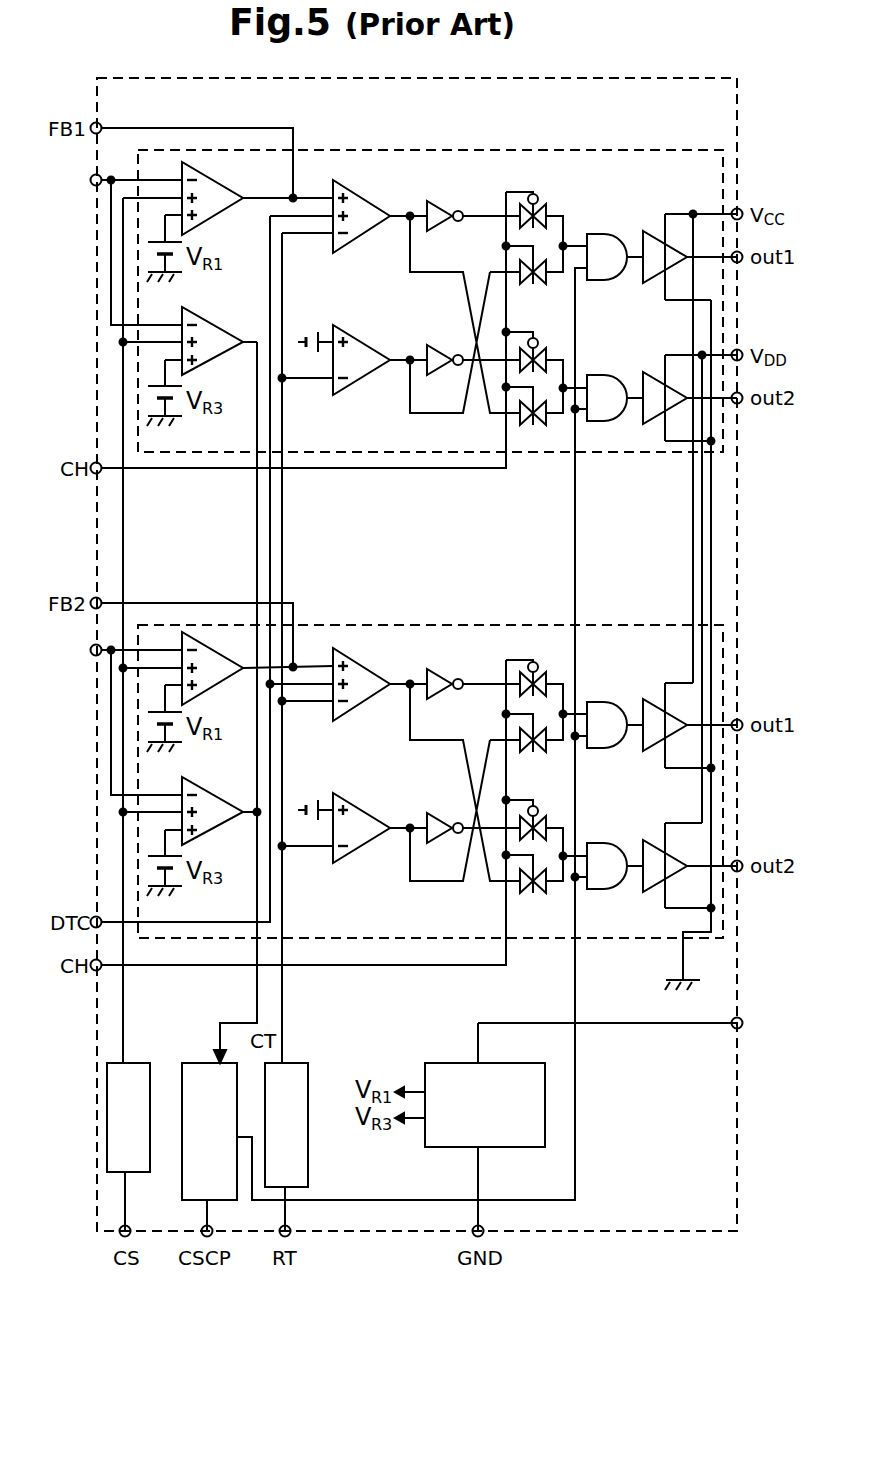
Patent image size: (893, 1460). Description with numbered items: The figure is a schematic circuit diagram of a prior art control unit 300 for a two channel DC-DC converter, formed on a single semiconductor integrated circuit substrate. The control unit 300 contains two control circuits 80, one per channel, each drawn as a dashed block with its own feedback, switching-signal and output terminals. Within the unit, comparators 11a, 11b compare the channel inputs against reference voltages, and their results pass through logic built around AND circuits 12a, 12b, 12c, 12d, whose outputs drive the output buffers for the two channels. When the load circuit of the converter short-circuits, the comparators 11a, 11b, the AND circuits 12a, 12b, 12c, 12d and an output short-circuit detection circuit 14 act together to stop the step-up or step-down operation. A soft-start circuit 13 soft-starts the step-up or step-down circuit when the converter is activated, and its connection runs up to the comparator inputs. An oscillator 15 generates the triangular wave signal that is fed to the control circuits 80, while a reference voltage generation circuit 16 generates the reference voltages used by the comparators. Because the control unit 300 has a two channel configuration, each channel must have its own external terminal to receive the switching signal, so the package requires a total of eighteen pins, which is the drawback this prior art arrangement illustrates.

The control unit 300 is at (676, 64).
The control circuit 80 is at (557, 150).
The comparator 11a is at (218, 328).
The comparator 11b is at (218, 798).
The AND circuit 12a is at (591, 233).
The AND circuit 12b is at (602, 375).
The AND circuit 12c is at (606, 702).
The AND circuit 12d is at (601, 842).
The soft-start circuit 13 is at (147, 1062).
The output short-circuit detection circuit 14 is at (195, 1062).
The oscillator 15 is at (298, 1062).
The reference voltage generation circuit 16 is at (497, 1063).